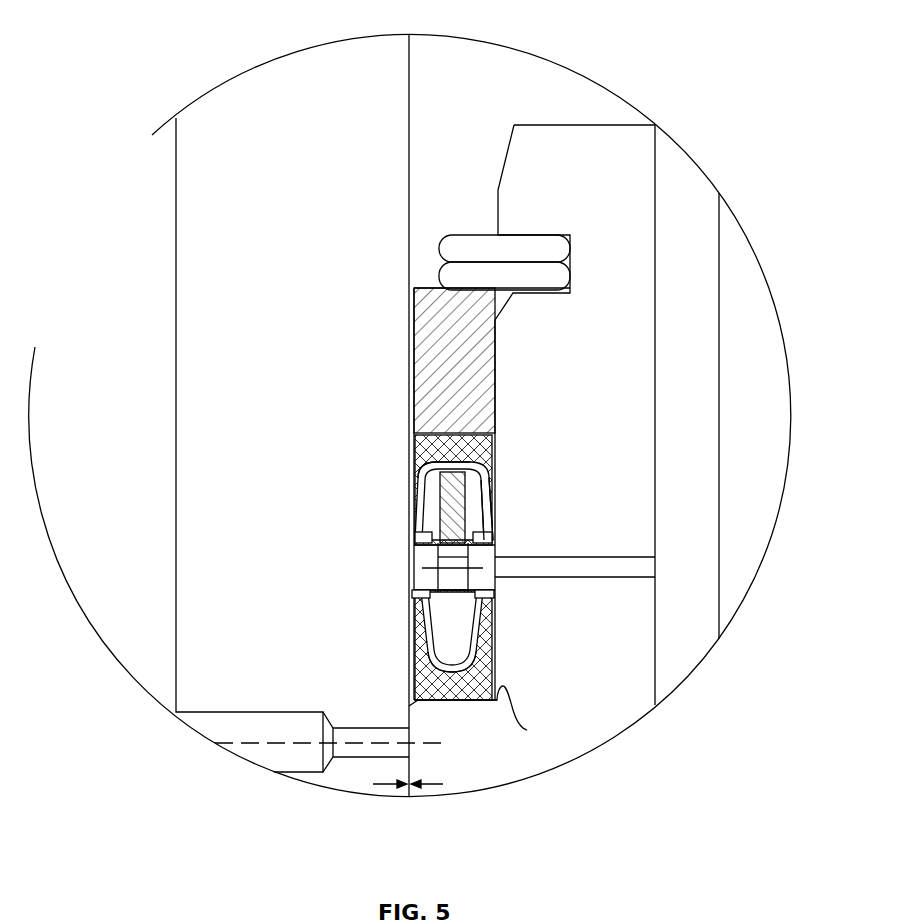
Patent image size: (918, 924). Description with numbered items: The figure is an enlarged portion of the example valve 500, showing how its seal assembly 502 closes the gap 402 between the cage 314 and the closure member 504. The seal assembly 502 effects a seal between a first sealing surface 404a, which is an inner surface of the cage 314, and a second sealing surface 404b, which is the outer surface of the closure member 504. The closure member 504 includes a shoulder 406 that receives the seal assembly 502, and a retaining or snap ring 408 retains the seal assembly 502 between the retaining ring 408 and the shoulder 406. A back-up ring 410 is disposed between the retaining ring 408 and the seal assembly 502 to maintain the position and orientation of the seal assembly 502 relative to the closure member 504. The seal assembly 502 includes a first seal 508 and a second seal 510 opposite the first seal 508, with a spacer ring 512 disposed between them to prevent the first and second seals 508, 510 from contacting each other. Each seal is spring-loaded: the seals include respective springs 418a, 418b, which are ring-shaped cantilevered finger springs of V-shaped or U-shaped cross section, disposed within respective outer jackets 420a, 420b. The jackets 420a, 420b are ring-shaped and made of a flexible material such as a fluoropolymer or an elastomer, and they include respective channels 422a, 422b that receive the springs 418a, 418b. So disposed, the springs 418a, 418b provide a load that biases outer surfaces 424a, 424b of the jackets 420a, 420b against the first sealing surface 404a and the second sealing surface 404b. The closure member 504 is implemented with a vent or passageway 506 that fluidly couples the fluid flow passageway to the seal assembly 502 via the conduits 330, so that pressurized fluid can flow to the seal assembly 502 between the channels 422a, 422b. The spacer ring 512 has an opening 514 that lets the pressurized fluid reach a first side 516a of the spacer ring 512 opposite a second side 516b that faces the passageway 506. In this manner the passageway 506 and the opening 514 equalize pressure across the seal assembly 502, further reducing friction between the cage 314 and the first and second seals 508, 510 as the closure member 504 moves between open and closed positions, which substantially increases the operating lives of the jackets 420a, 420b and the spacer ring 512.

The valve 500 is at (135, 65).
The cage 314 is at (300, 50).
The conduits 330 is at (695, 260).
The gap 402 is at (409, 790).
The first sealing surface 404a is at (410, 150).
The second sealing surface 404b is at (410, 722).
The shoulder 406 is at (527, 730).
The retaining ring 408 is at (516, 248).
The back-up ring 410 is at (497, 342).
The spring 418a is at (428, 652).
The spring 418b is at (428, 503).
The outer jacket 420a is at (425, 683).
The outer jacket 420b is at (425, 455).
The channel 422a is at (420, 600).
The channel 422b is at (420, 535).
The outer surface 424a is at (420, 640).
The outer surface 424b is at (420, 475).
The seal assembly 502 is at (418, 258).
The closure member 504 is at (597, 152).
The passageway 506 is at (602, 578).
The first seal 508 is at (515, 670).
The second seal 510 is at (505, 462).
The spacer ring 512 is at (470, 516).
The opening 514 is at (440, 560).
The first side 516a is at (470, 558).
The second side 516b is at (432, 578).